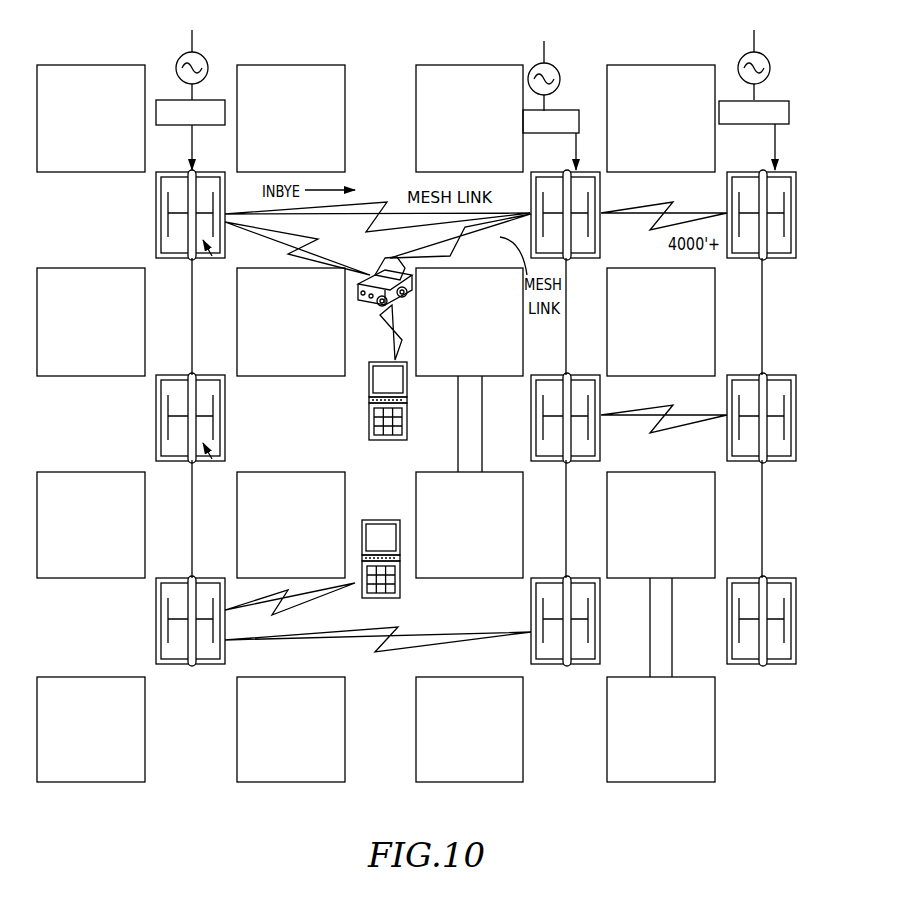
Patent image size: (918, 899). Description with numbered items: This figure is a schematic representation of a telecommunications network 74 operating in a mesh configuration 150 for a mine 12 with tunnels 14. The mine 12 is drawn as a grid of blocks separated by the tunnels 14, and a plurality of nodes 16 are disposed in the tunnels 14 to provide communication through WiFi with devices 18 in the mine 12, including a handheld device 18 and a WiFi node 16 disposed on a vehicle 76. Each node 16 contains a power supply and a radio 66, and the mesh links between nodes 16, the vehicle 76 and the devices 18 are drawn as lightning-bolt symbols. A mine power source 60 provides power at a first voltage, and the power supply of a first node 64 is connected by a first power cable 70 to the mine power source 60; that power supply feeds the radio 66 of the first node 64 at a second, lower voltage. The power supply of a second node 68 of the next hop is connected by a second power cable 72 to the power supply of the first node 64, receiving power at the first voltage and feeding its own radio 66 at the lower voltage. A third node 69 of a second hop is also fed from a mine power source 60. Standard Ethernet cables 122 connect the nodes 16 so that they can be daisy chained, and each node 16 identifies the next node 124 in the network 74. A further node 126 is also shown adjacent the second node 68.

The mine 12 is at (100, 376).
The tunnels 14 is at (328, 446).
The nodes 16 is at (531, 400).
The devices 18 is at (369, 418).
The mine power source 60 is at (168, 100).
The first node 64 is at (156, 215).
The radio 66 is at (213, 258).
The second node 68 is at (156, 415).
The third node 69 is at (754, 172).
The first power cable 70 is at (192, 142).
The second power cable 72 is at (190, 296).
The network 74 is at (394, 62).
The vehicle 76 is at (372, 310).
The Ethernet cable 122 is at (567, 340).
The next node 124 is at (601, 197).
The node 126 is at (225, 415).
The mesh configuration 150 is at (243, 812).